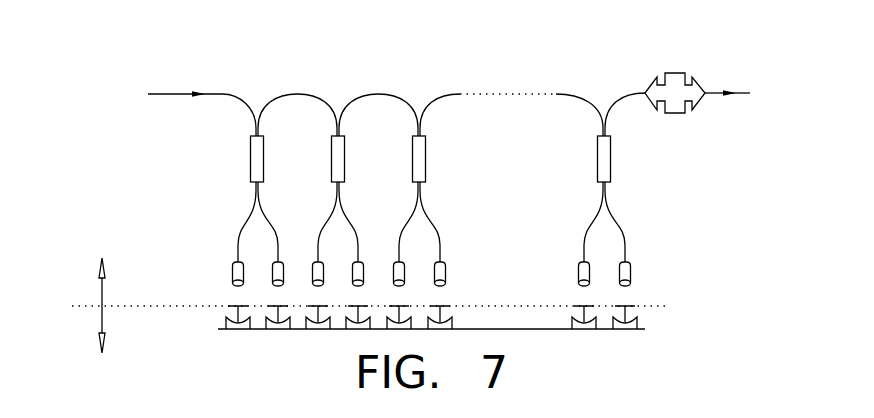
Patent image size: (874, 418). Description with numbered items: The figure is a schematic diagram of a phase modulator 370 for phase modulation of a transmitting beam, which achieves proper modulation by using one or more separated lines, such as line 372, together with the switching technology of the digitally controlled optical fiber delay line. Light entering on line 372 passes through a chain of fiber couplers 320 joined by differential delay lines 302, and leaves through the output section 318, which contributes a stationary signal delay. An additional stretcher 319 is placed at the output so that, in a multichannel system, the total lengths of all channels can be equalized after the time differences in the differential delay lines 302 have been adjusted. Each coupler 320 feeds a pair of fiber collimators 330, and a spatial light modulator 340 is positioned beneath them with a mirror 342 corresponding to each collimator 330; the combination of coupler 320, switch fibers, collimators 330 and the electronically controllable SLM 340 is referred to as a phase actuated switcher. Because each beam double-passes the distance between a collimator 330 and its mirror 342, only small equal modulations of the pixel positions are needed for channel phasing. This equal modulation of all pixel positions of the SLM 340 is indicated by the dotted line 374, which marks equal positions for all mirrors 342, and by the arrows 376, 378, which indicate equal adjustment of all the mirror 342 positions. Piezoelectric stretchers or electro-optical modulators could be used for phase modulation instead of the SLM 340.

The phase modulator 370 is at (140, 50).
The line 372 is at (162, 105).
The fiber coupler 320 is at (228, 170).
The differential delay line 302 is at (425, 76).
The output section 318 is at (618, 104).
The additional stretcher 319 is at (678, 113).
The fiber collimator 330 is at (572, 268).
The spatial light modulator 340 is at (338, 333).
The mirror 342 is at (218, 298).
The dotted line 374 is at (88, 308).
The arrow 376 is at (105, 315).
The arrow 378 is at (98, 290).